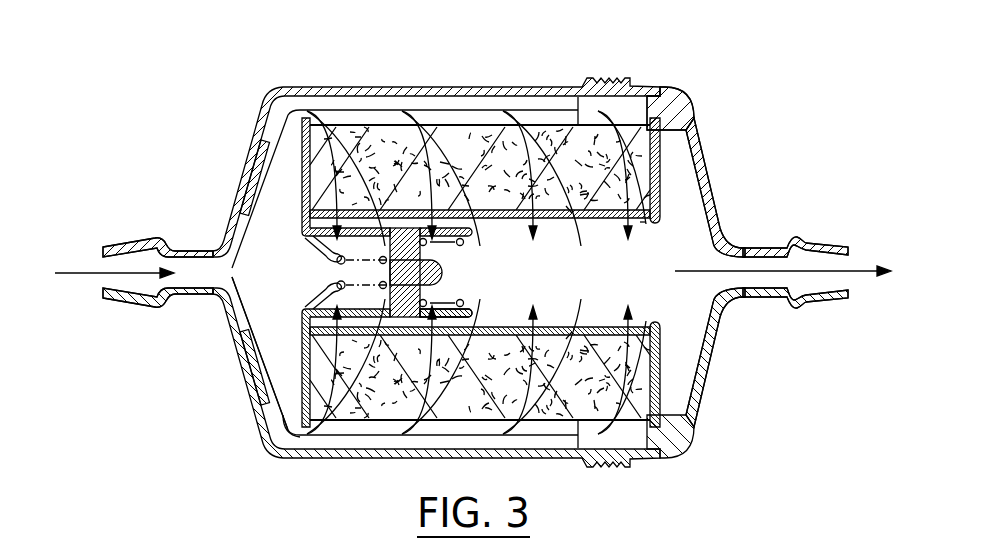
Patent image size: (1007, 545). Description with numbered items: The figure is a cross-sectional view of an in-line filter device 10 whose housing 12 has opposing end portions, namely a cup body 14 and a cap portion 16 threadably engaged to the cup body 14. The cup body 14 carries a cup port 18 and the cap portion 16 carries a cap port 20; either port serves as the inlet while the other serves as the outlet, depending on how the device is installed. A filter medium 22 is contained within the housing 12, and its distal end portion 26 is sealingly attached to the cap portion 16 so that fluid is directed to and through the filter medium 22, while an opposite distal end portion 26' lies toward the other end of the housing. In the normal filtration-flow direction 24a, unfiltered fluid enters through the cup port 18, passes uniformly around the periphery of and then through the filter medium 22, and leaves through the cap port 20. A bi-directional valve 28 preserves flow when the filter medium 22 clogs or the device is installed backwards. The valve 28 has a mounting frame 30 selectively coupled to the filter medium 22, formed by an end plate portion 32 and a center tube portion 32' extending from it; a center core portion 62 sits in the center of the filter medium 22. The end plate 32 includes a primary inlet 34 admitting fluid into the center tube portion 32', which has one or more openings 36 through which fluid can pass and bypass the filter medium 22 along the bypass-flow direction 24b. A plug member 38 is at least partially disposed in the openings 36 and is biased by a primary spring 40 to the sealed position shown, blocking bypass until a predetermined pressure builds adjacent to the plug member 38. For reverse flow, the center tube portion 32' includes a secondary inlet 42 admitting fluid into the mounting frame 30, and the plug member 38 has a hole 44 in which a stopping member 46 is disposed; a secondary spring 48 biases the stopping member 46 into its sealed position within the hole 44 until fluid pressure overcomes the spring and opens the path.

The in-line filter device 10 is at (170, 169).
The housing 12 is at (268, 96).
The cup body 14 is at (244, 165).
The cap portion 16 is at (710, 173).
The cup port 18 is at (100, 257).
The cap port 20 is at (848, 255).
The filter medium 22 is at (536, 125).
The filtration-flow direction 24a is at (76, 276).
The bypass-flow direction 24b is at (696, 274).
The distal end portion 26 is at (702, 109).
The distal end portion 26' is at (266, 391).
The bi-directional valve 28 is at (474, 271).
The mounting frame 30 is at (473, 318).
The end plate portion 32 is at (252, 365).
The center tube portion 32' is at (480, 346).
The primary inlet 34 is at (331, 260).
The openings 36 is at (395, 236).
The plug member 38 is at (389, 318).
The primary spring 40 is at (458, 300).
The secondary inlet 42 is at (500, 212).
The hole 44 is at (381, 255).
The stopping member 46 is at (455, 306).
The secondary spring 48 is at (331, 284).
The center core portion 62 is at (640, 225).